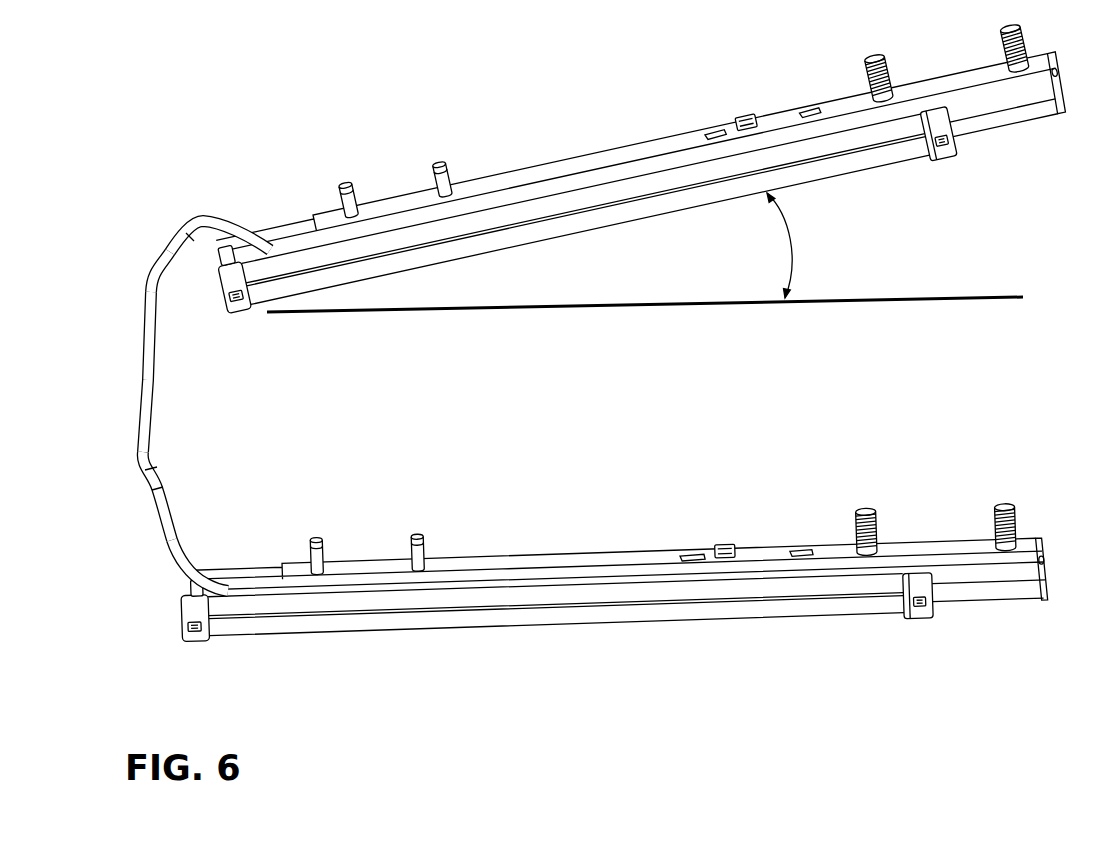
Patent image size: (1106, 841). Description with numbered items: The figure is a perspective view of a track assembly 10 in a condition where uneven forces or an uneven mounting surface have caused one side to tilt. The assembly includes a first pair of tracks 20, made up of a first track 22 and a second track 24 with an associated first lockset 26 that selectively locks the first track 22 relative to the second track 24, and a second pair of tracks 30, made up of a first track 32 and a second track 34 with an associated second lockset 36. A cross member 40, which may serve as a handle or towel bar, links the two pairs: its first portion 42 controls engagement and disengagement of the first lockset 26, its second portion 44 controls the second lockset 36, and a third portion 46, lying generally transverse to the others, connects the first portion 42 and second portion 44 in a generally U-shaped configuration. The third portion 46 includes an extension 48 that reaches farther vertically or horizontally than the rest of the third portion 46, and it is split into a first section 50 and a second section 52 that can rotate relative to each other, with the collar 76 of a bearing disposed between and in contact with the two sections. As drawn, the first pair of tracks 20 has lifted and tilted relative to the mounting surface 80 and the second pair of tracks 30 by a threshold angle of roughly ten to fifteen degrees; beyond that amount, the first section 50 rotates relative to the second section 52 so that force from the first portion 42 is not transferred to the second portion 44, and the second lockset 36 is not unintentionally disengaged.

The track assembly 10 is at (470, 716).
The first pair of tracks 20 is at (797, 82).
The first track 22 is at (632, 148).
The second track 24 is at (904, 178).
The first lockset 26 is at (746, 113).
The second pair of tracks 30 is at (883, 643).
The first track 32 is at (618, 539).
The second track 34 is at (730, 612).
The second lockset 36 is at (728, 542).
The cross member 40 is at (173, 388).
The first portion 42 is at (262, 252).
The second portion 44 is at (200, 590).
The third portion 46 is at (135, 488).
The extension 48 is at (147, 392).
The first section 50 is at (190, 222).
The second section 52 is at (175, 247).
The collar 76 is at (192, 240).
The mounting surface 80 is at (873, 302).